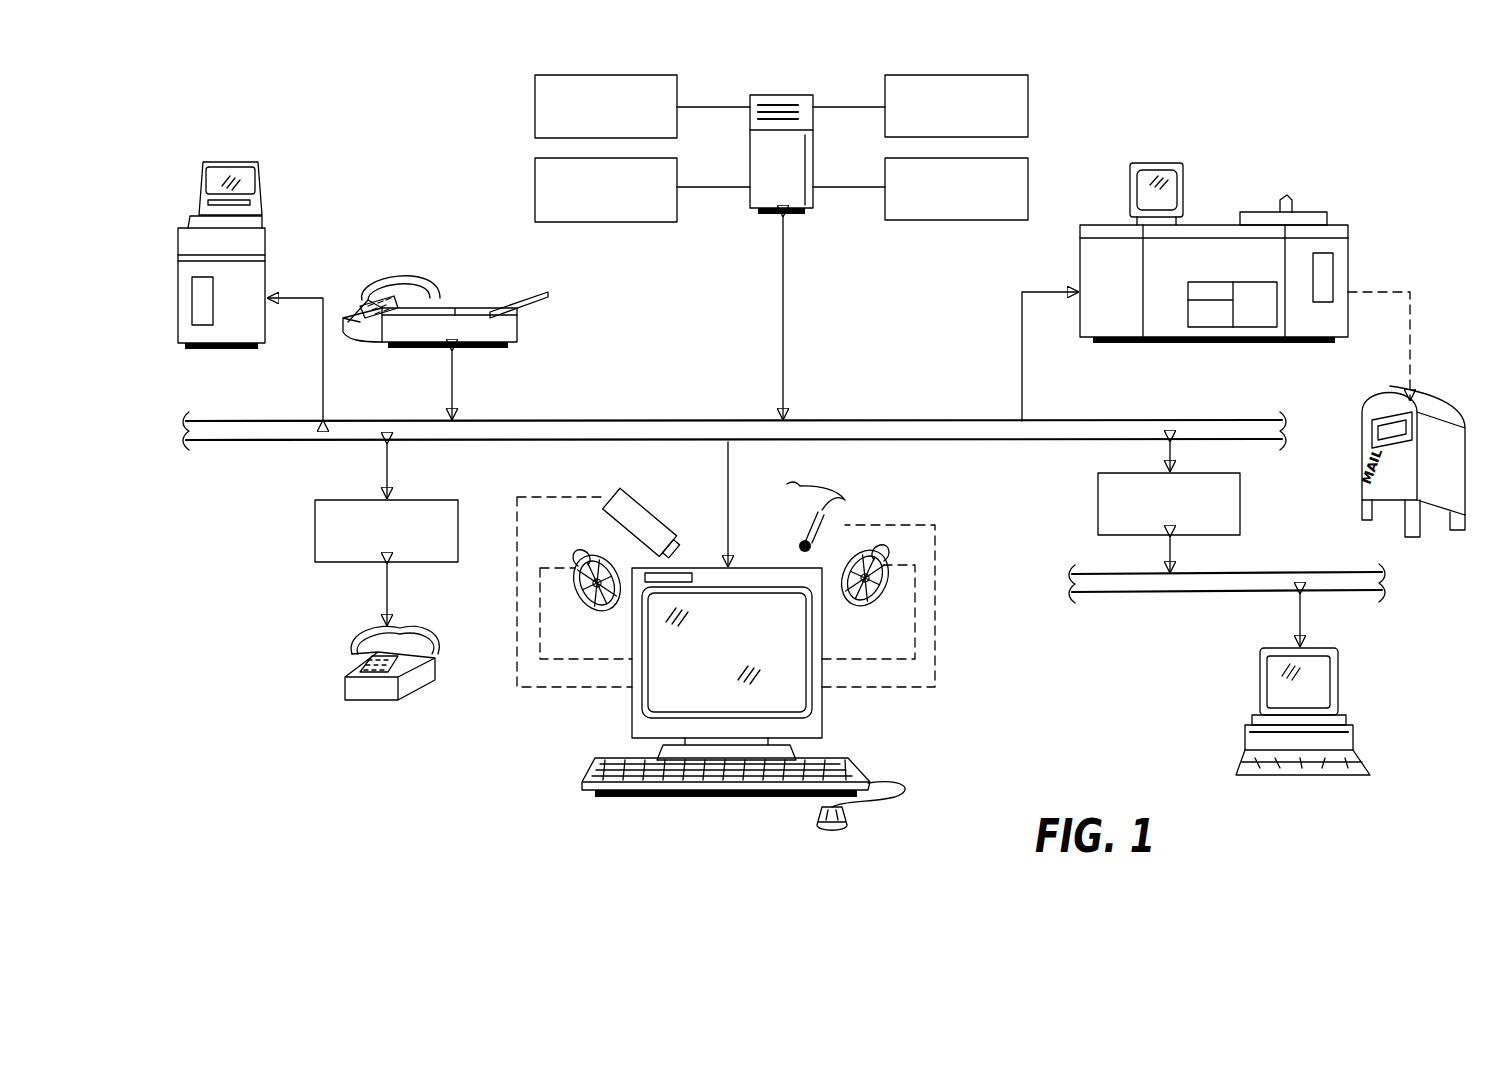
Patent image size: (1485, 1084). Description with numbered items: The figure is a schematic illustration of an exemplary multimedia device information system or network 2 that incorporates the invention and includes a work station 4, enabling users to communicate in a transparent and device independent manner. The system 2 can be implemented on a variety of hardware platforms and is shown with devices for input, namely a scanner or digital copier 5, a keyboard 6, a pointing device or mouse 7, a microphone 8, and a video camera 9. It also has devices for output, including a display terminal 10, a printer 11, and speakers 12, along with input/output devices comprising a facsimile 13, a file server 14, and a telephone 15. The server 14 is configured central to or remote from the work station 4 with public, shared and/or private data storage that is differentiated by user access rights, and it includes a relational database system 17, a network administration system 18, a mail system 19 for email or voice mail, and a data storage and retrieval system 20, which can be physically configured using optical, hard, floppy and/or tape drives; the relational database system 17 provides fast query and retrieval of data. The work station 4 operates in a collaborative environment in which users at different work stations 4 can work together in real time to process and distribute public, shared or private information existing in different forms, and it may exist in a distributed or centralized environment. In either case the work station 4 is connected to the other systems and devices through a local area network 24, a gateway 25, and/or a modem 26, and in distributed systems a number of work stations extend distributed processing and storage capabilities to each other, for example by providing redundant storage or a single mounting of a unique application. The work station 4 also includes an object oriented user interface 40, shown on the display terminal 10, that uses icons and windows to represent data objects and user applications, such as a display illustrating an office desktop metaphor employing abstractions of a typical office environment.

The multimedia device information system 2 is at (396, 118).
The work station 4 is at (578, 718).
The scanner or digital copier 5 is at (265, 278).
The keyboard 6 is at (826, 760).
The pointing device or mouse 7 is at (845, 833).
The microphone 8 is at (818, 520).
The video camera 9 is at (643, 512).
The display terminal 10 is at (232, 165).
The printer 11 is at (1213, 220).
The speakers 12 is at (602, 613).
The facsimile 13 is at (478, 350).
The file server 14 is at (780, 95).
The telephone 15 is at (385, 692).
The relational database system 17 is at (1028, 83).
The network administration system 18 is at (535, 85).
The mail system 19 is at (945, 220).
The data storage and retrieval system 20 is at (620, 222).
The local area network 24 is at (861, 420).
The gateway 25 is at (1098, 485).
The modem 26 is at (315, 515).
The object oriented user interface 40 is at (244, 186).